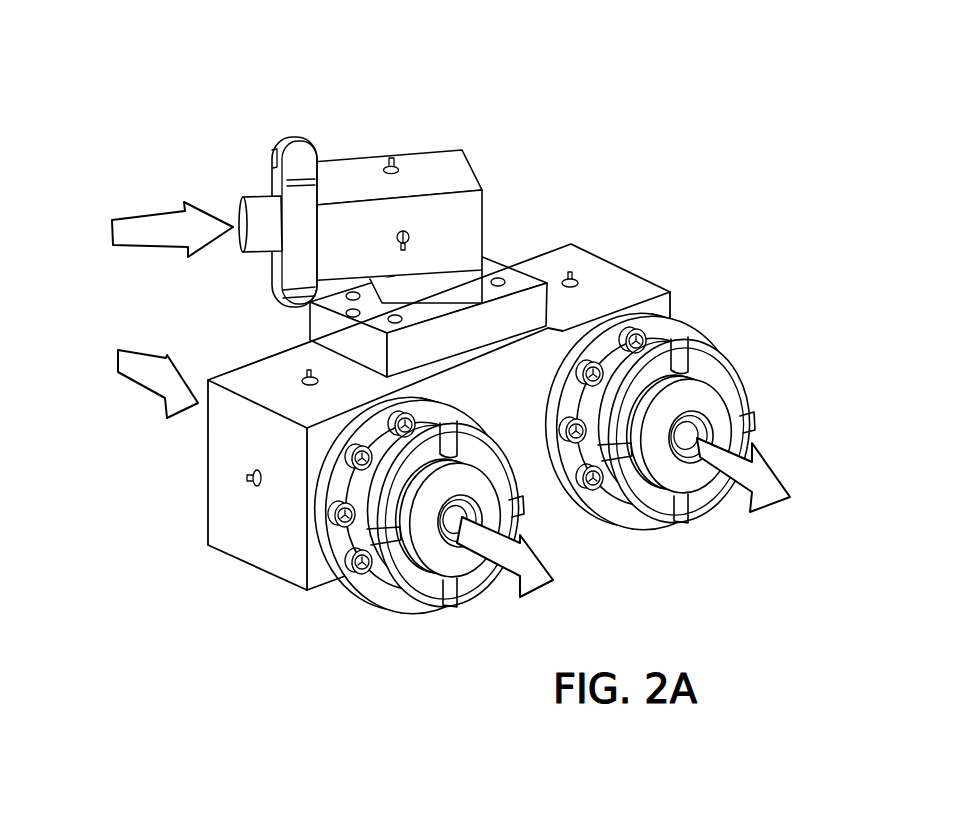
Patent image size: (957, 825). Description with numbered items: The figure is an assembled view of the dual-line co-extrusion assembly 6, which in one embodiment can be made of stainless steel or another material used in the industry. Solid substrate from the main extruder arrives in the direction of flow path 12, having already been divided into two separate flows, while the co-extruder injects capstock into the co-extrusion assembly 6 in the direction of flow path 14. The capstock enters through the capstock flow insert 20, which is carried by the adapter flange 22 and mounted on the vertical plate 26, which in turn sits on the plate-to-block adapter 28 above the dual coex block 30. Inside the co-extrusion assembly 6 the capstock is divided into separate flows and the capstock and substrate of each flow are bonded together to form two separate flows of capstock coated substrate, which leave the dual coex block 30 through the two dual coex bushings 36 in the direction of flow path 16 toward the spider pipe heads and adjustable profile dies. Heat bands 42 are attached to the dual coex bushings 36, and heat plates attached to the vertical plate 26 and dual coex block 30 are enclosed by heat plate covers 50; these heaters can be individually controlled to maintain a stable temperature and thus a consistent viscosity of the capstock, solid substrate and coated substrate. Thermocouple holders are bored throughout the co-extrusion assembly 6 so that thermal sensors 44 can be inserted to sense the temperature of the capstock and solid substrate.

The dual-line co-extrusion assembly 6 is at (456, 341).
The flow path 12 is at (128, 379).
The flow path 14 is at (107, 258).
The flow path 16 is at (532, 590).
The capstock flow insert 20 is at (240, 203).
The adapter flange 22 is at (285, 136).
The vertical plate 26 is at (472, 287).
The plate-to-block adapter 28 is at (548, 292).
The dual coex block 30 is at (540, 488).
The dual coex bushing 36 is at (411, 592).
The heat bands 42 is at (316, 560).
The thermal sensors 44 is at (396, 153).
The heat plate covers 50 is at (463, 170).